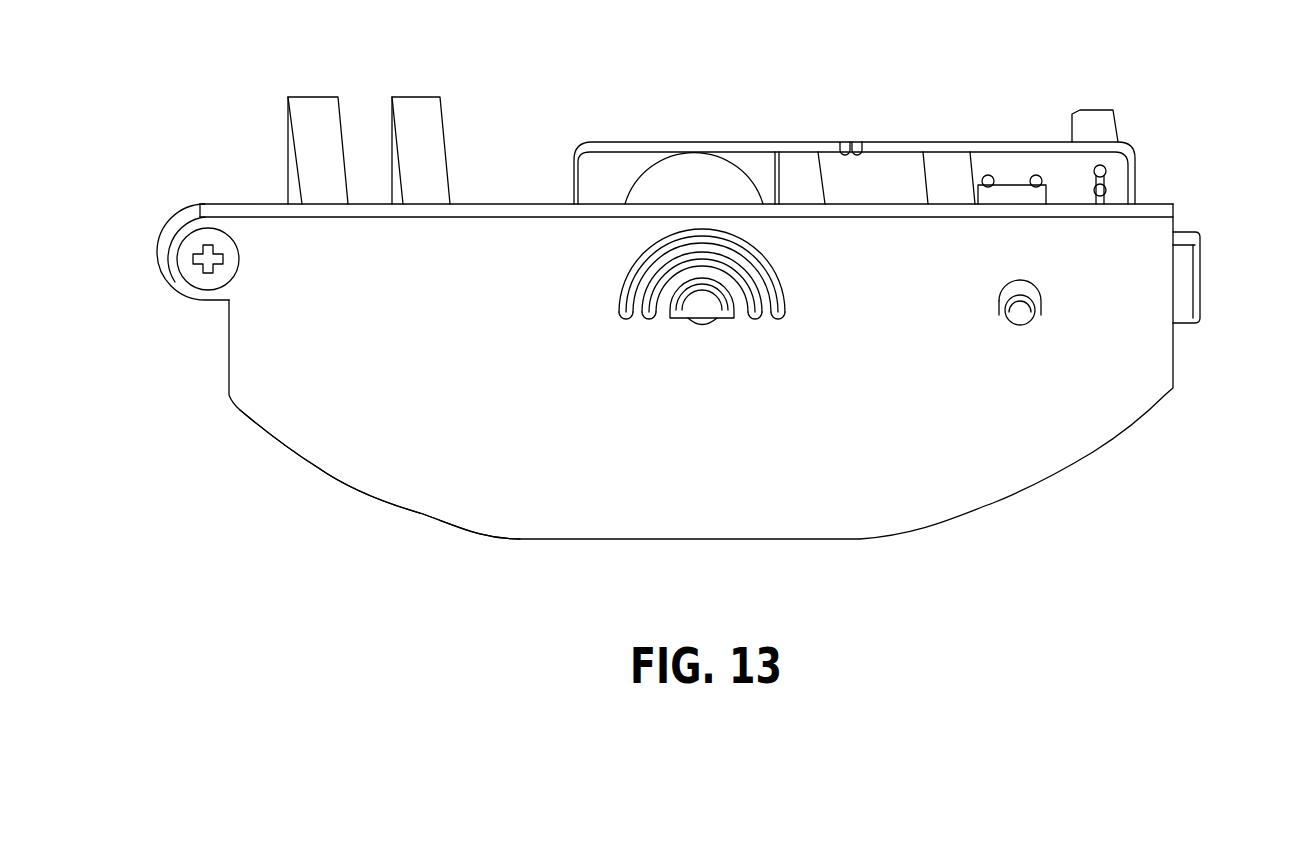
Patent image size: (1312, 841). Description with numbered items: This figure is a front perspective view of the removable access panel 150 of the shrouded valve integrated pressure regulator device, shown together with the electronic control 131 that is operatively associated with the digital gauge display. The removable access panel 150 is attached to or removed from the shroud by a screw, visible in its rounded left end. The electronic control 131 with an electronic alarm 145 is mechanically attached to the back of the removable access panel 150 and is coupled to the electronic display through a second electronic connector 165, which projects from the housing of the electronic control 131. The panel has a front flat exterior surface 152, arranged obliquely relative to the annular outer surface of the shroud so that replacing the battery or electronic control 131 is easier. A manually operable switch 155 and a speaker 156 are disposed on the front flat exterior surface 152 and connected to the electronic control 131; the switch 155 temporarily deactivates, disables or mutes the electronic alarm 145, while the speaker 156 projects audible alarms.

The electronic control 131 is at (623, 141).
The electronic alarm 145 is at (715, 174).
The removable access panel 150 is at (1068, 428).
The front flat exterior surface 152 is at (357, 442).
The manually operable switch 155 is at (1043, 303).
The speaker 156 is at (665, 276).
The second electronic connector 165 is at (1102, 125).